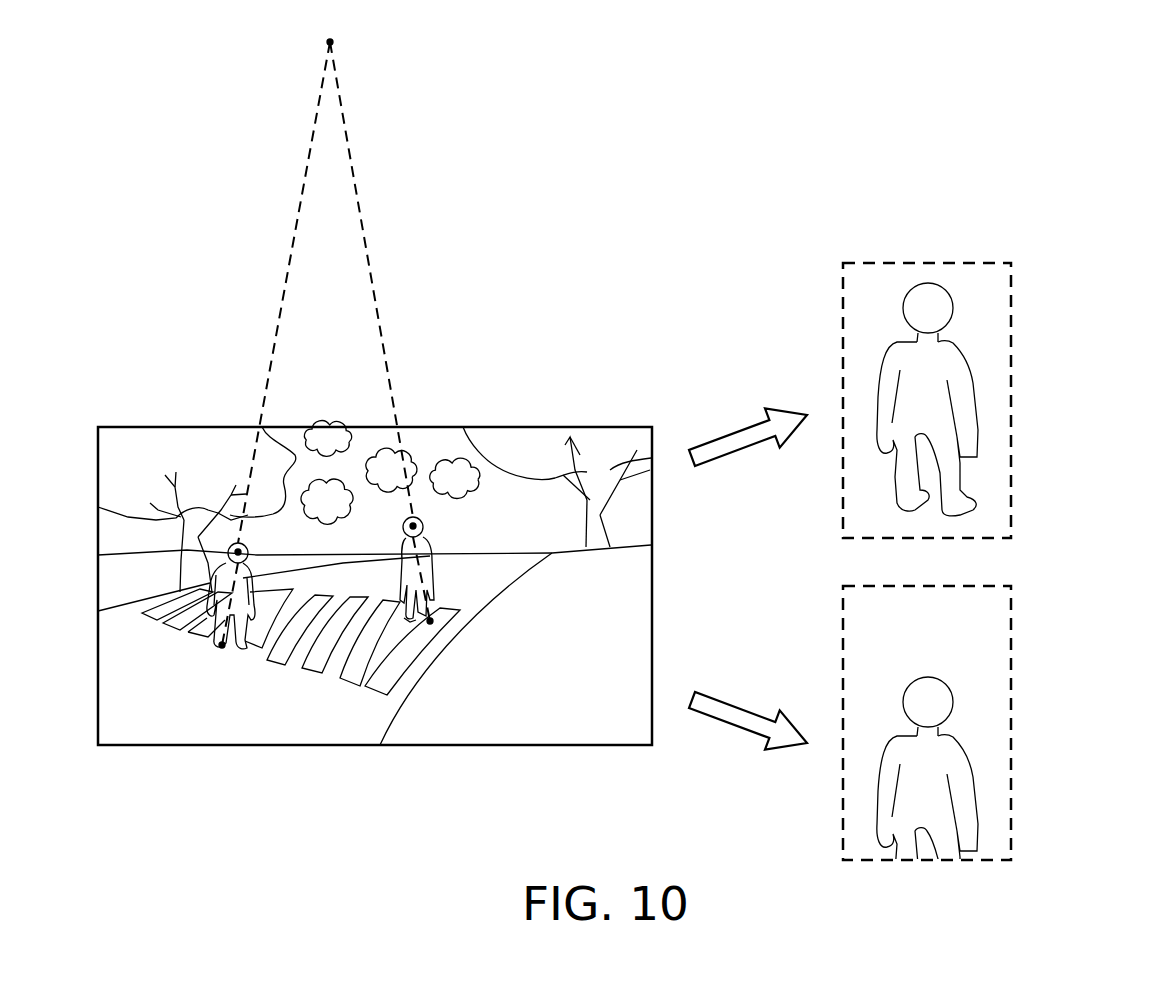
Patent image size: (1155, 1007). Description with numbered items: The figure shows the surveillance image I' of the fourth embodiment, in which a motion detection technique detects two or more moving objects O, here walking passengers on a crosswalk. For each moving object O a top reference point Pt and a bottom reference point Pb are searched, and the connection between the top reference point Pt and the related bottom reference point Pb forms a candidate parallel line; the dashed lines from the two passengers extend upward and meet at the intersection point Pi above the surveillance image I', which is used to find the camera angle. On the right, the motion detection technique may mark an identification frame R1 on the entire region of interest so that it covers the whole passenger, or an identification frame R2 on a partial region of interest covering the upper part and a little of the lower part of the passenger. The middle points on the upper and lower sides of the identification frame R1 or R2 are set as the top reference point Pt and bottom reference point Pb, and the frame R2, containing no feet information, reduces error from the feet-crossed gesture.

The intersection point Pi is at (335, 42).
The top reference point Pt is at (229, 549).
The bottom reference point Pb is at (222, 648).
The moving object o is at (248, 552).
The surveillance image I' is at (375, 535).
The identification frame R1 is at (1011, 410).
The identification frame R2 is at (1011, 731).